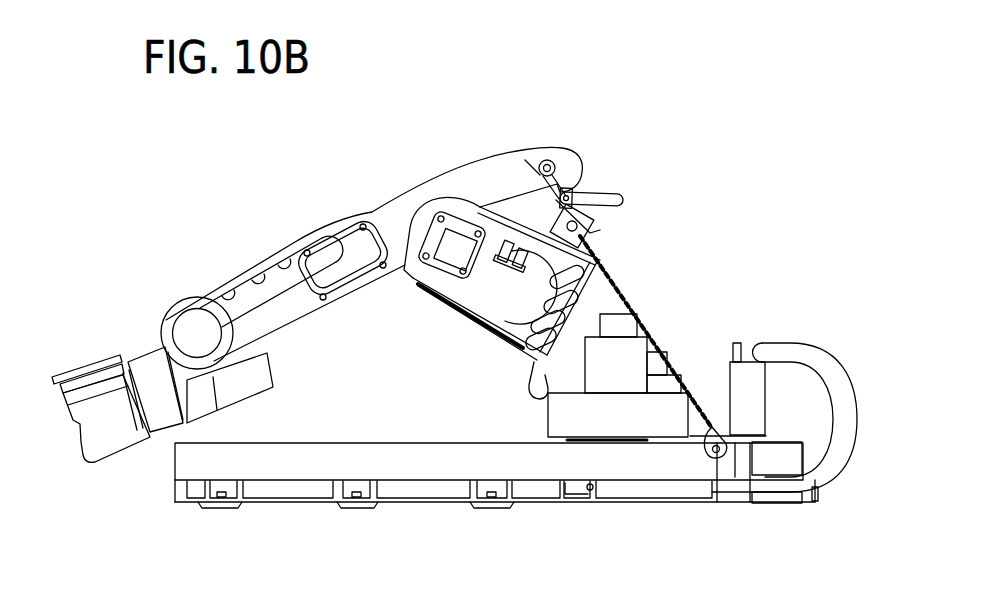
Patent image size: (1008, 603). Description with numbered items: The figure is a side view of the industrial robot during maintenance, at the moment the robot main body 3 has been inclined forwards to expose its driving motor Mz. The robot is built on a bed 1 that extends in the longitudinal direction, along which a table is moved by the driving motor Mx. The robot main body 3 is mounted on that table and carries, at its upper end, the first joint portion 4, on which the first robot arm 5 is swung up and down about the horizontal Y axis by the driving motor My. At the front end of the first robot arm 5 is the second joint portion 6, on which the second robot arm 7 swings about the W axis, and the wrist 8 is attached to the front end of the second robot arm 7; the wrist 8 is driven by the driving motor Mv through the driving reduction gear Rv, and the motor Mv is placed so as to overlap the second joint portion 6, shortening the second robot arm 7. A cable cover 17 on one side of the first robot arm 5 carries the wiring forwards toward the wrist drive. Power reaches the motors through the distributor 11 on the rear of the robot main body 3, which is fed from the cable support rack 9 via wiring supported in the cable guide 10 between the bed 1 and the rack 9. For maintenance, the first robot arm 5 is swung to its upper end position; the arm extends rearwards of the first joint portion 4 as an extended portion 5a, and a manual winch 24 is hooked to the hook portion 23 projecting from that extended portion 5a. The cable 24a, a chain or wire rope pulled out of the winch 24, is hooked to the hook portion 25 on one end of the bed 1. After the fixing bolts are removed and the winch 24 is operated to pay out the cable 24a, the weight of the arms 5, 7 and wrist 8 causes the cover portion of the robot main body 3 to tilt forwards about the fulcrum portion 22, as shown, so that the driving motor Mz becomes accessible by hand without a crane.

The bed 1 is at (305, 503).
The robot main body 3 is at (445, 310).
The first joint portion 4 is at (410, 283).
The first robot arm 5 is at (373, 210).
The extended portion 5a is at (522, 160).
The second joint portion 6 is at (192, 322).
The second robot arm 7 is at (155, 345).
The wrist 8 is at (122, 443).
The cable support rack 9 is at (757, 402).
The cable guide 10 is at (818, 362).
The distributor 11 is at (593, 220).
The cable cover 17 is at (287, 285).
The fulcrum portion 22 is at (518, 384).
The hook portion 23 is at (548, 160).
The manual winch 24 is at (578, 183).
The cable 24a is at (630, 290).
The hook portion 25 is at (728, 460).
The driving motor Mv is at (233, 400).
The driving motor Mx is at (797, 503).
The driving motor My is at (442, 248).
The driving motor Mz is at (625, 388).
The driving reduction gear Rv is at (157, 428).